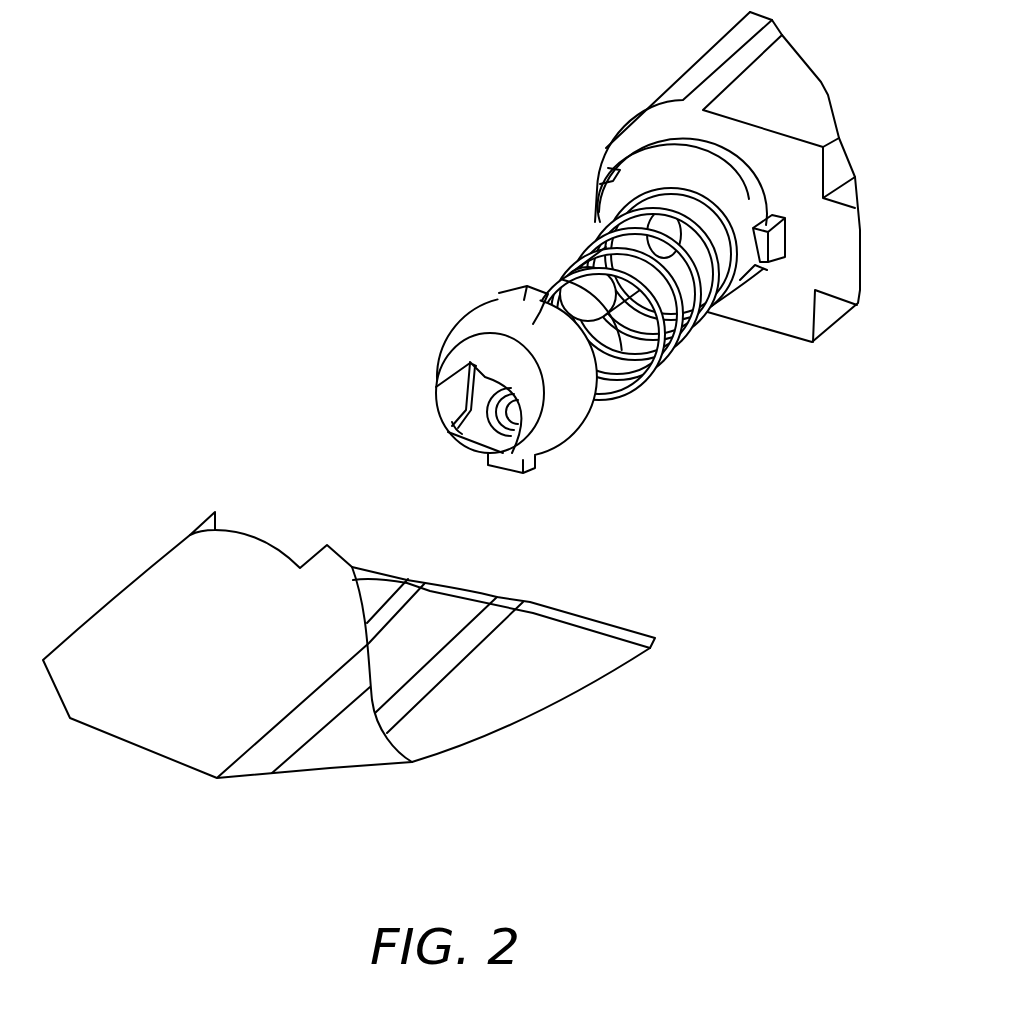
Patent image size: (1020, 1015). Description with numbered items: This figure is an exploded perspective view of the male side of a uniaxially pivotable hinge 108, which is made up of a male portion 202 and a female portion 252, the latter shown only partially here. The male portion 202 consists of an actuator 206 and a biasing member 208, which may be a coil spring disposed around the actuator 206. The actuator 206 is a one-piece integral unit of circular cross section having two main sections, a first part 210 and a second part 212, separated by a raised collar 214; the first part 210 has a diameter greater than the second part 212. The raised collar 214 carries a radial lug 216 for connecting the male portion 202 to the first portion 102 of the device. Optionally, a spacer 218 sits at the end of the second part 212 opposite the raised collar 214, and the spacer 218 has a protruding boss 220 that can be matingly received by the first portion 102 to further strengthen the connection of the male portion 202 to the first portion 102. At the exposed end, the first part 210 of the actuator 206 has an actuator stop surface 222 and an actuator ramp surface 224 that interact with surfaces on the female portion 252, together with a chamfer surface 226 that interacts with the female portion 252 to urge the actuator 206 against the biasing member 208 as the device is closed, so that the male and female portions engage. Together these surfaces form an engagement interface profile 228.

The uniaxially pivotable hinge 108 is at (100, 62).
The first portion 102 is at (671, 87).
The male portion 202 is at (339, 268).
The actuator 206 is at (576, 285).
The biasing member 208 is at (592, 215).
The first part 210 is at (440, 408).
The second part 212 is at (590, 332).
The raised collar 214 is at (490, 308).
The radial lug 216 is at (520, 292).
The spacer 218 is at (645, 166).
The protruding boss 220 is at (776, 240).
The actuator stop surface 222 is at (468, 364).
The actuator ramp surface 224 is at (505, 392).
The chamfer surface 226 is at (460, 436).
The engagement interface profile 228 is at (484, 359).
The female portion 252 is at (304, 508).